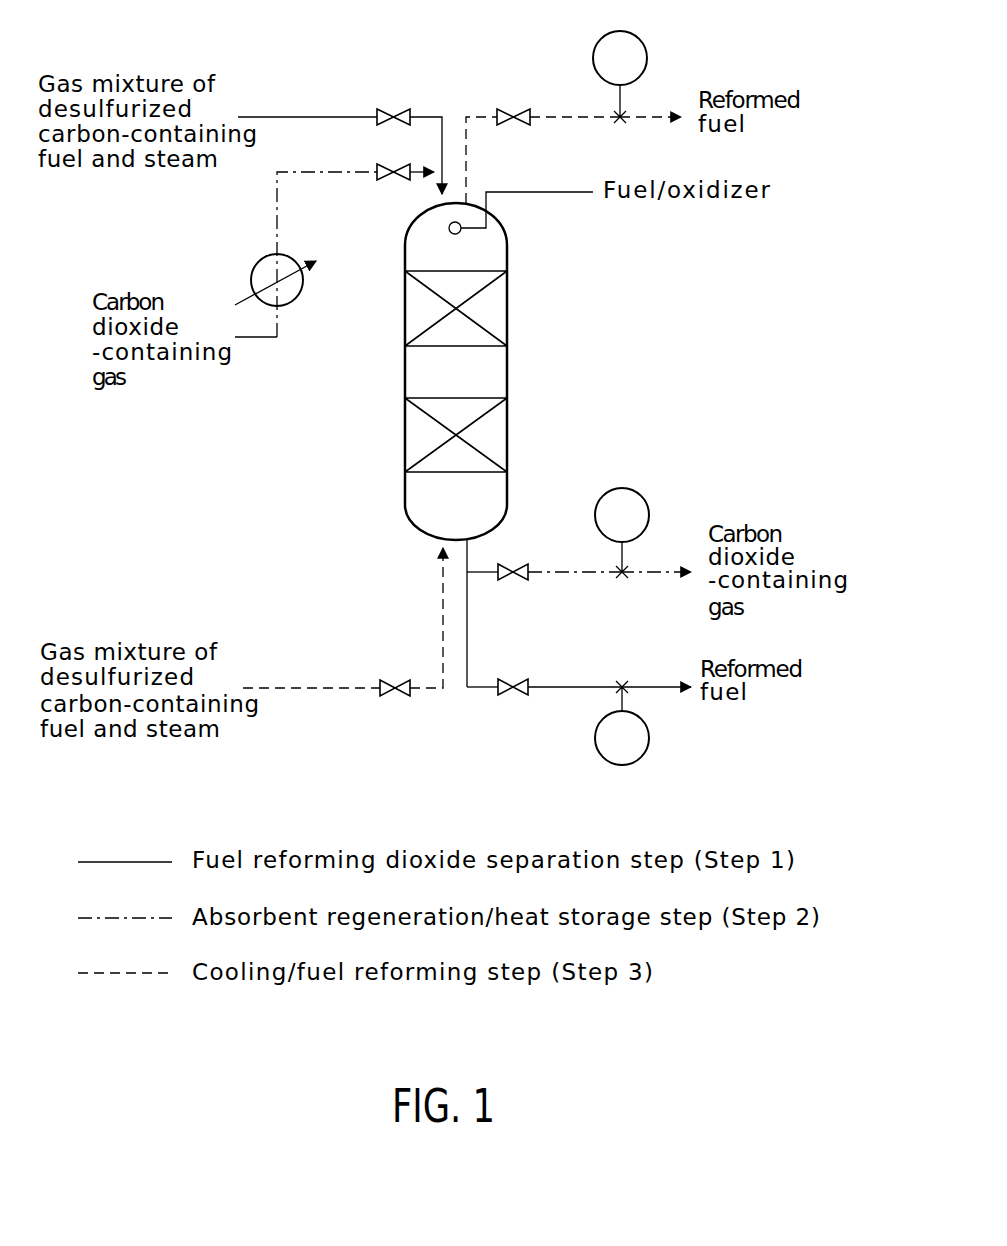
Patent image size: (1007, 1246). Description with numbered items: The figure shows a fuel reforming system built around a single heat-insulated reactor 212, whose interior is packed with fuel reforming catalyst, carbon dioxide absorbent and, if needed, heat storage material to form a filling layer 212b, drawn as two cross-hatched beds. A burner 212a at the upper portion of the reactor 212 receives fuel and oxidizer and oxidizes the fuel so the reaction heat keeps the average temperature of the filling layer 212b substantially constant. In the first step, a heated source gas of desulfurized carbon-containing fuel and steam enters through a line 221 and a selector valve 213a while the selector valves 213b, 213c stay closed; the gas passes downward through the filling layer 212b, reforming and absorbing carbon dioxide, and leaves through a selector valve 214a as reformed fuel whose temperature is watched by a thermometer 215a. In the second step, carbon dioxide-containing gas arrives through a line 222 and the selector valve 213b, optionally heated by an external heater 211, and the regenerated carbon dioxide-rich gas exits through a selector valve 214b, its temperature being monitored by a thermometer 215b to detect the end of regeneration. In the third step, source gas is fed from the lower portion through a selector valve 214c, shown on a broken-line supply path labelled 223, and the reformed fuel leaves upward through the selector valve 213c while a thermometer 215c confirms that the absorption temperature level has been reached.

The external heater 211 is at (297, 298).
The reactor 212 is at (405, 375).
The burner 212a is at (462, 236).
The filling layer 212b is at (497, 310).
The selector valve 213a is at (393, 110).
The selector valve 213b is at (395, 180).
The selector valve 213c is at (512, 110).
The selector valve 214a is at (513, 697).
The selector valve 214b is at (513, 565).
The selector valve 214c is at (393, 679).
The thermometer 215a is at (649, 739).
The thermometer 215b is at (660, 486).
The thermometer 215c is at (660, 27).
The line 221 is at (322, 117).
The line 222 is at (297, 175).
The gas mixture supply line 223 is at (311, 688).